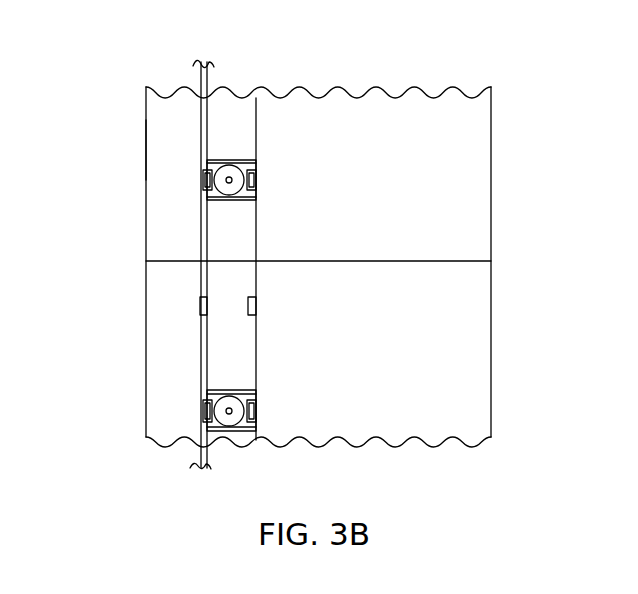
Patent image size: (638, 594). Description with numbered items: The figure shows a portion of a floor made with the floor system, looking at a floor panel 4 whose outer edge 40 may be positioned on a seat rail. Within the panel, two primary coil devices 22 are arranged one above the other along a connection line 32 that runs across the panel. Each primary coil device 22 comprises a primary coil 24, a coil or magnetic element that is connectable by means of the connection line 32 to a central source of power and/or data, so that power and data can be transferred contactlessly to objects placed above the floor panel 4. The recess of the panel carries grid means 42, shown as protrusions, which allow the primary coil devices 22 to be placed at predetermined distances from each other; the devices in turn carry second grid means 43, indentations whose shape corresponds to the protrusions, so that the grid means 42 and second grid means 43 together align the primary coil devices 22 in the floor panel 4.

The floor panel 4 is at (468, 172).
The primary coil device 22 is at (230, 146).
The primary coil 24 is at (236, 164).
The connection line 32 is at (201, 62).
The outer edge 40 is at (131, 148).
The grid means 42 is at (258, 180).
The second grid means 43 is at (205, 177).